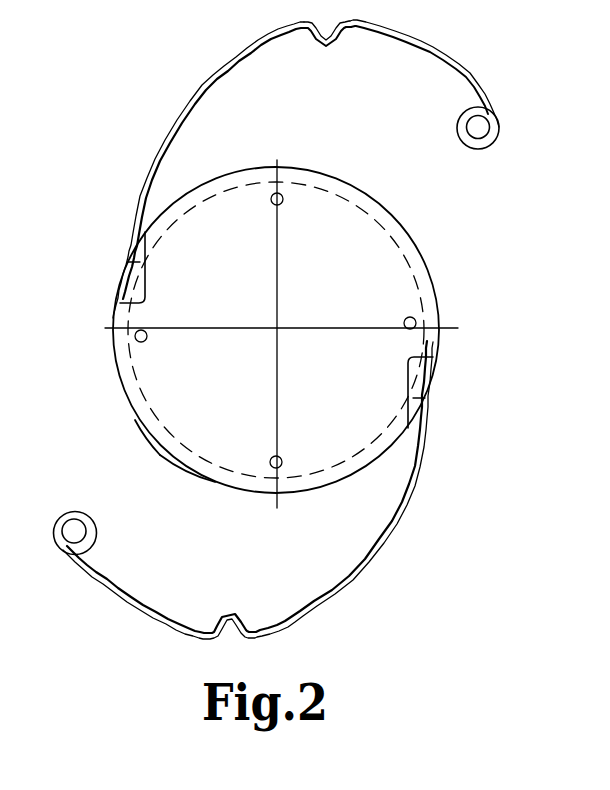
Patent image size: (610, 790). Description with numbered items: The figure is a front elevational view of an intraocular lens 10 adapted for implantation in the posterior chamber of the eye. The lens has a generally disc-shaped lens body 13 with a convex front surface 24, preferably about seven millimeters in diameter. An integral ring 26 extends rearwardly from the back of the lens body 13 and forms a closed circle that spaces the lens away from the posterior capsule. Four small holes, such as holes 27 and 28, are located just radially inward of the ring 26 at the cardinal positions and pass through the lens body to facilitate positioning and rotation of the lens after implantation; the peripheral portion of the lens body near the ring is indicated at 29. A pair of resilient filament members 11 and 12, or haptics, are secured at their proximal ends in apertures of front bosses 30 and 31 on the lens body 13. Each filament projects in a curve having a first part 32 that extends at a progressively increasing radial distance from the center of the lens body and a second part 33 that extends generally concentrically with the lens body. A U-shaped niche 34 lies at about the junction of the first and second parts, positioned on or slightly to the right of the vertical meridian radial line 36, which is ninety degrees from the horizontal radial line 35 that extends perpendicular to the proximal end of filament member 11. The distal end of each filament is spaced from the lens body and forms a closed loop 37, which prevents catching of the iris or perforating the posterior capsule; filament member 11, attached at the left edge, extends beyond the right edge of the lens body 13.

The intraocular lens 10 is at (493, 304).
The resilient filament member 11 is at (189, 87).
The resilient filament member 12 is at (155, 663).
The lens body 13 is at (362, 254).
The convex front surface 24 is at (164, 410).
The integral ring 26 is at (427, 272).
The hole 27 is at (283, 197).
The hole 28 is at (271, 467).
The peripheral edge of lens body 29 is at (190, 471).
The front boss 30 is at (127, 293).
The front boss 31 is at (426, 360).
The first part of curved filament member 32 is at (251, 52).
The second part of curved filament member 33 is at (424, 73).
The niche 34 is at (345, 42).
The radial line 35 is at (108, 330).
The meridian radial line 36 is at (278, 161).
The closed loop 37 is at (501, 136).